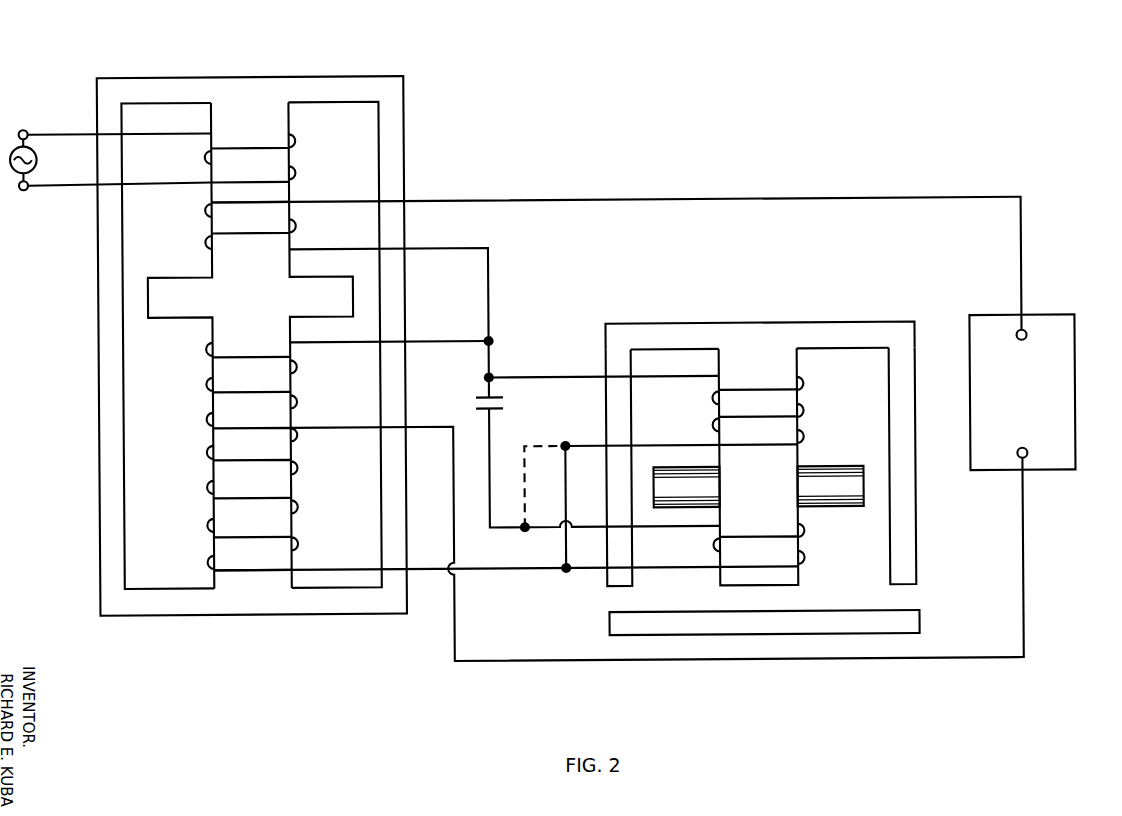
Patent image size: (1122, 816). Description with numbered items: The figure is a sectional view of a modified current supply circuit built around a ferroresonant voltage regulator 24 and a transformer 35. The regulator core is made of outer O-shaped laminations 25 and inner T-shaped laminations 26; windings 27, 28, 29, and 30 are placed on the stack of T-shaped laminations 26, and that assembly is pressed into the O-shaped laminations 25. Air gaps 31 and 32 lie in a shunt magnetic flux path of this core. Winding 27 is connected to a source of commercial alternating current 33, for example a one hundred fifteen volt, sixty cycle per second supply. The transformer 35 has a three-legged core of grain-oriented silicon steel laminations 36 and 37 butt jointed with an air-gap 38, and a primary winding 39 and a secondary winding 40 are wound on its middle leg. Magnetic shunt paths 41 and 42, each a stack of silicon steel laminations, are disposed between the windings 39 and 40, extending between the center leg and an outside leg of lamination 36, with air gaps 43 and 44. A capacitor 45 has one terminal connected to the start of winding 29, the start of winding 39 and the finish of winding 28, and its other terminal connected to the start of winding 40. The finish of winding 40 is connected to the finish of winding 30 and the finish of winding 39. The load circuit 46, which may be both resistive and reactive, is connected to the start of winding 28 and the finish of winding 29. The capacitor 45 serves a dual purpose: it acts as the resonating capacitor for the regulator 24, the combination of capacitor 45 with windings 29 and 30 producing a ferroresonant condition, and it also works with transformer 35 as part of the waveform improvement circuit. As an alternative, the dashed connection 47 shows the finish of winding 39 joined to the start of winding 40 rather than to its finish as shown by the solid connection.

The ferroresonant voltage regulator 24 is at (253, 328).
The outer O-shaped laminations 25 is at (339, 72).
The inner T-shaped laminations 26 is at (228, 289).
The winding 27 is at (297, 139).
The winding 28 is at (297, 224).
The winding 29 is at (297, 400).
The winding 30 is at (297, 505).
The air gap 31 is at (138, 297).
The air gap 32 is at (365, 296).
The source of commercial alternating current 33 is at (42, 156).
The transformer 35 is at (740, 307).
The laminations 36 is at (917, 418).
The laminations 37 is at (918, 620).
The air-gap 38 is at (618, 592).
The primary winding 39 is at (803, 412).
The secondary winding 40 is at (776, 553).
The magnetic shunt path 41 is at (810, 489).
The magnetic shunt path 42 is at (698, 489).
The air gap 43 is at (880, 488).
The air gap 44 is at (640, 485).
The capacitor 45 is at (495, 396).
The load circuit 46 is at (1078, 408).
The dashed connection 47 is at (545, 448).